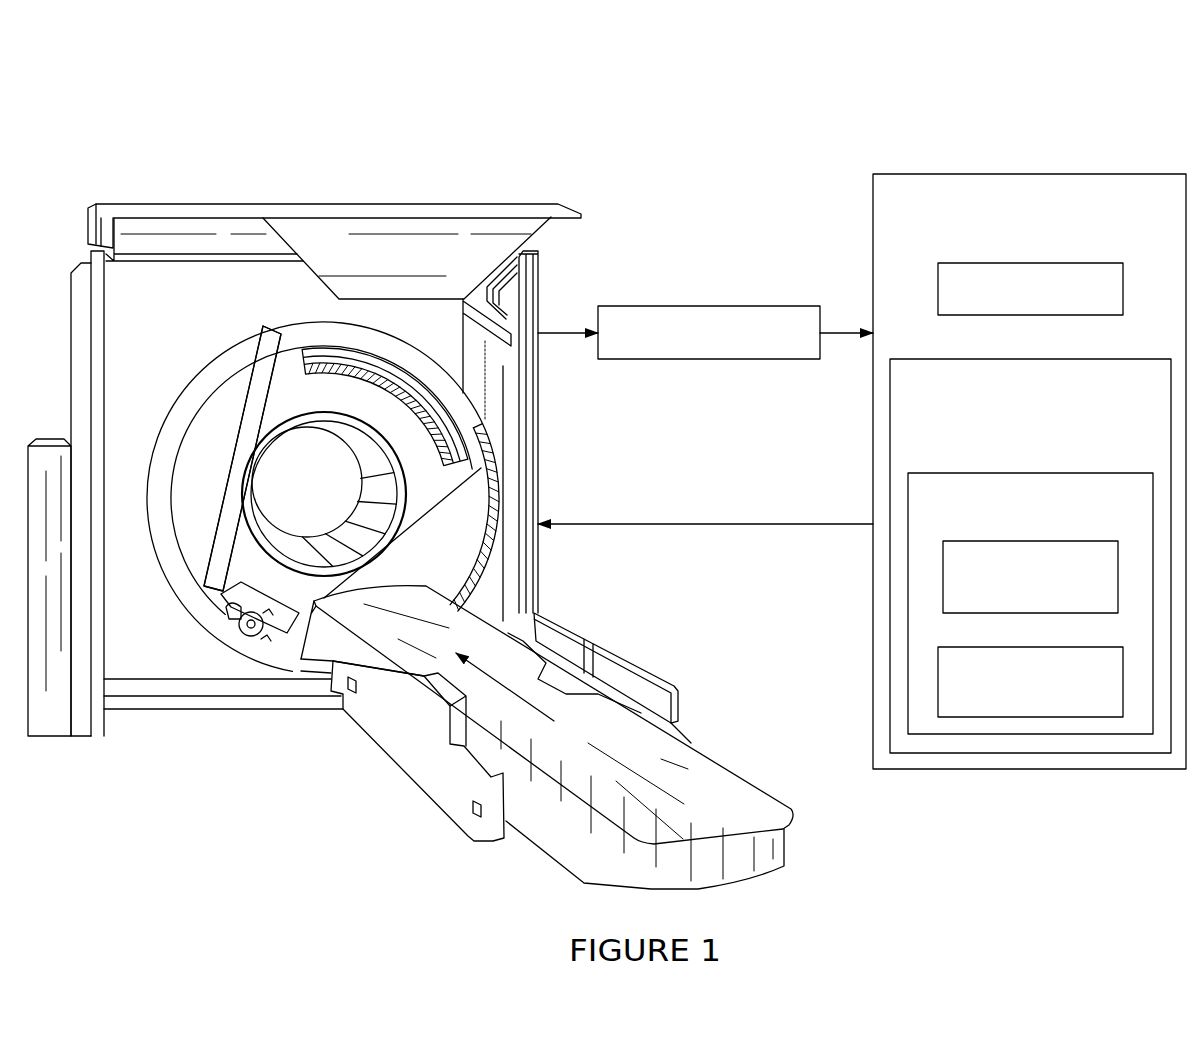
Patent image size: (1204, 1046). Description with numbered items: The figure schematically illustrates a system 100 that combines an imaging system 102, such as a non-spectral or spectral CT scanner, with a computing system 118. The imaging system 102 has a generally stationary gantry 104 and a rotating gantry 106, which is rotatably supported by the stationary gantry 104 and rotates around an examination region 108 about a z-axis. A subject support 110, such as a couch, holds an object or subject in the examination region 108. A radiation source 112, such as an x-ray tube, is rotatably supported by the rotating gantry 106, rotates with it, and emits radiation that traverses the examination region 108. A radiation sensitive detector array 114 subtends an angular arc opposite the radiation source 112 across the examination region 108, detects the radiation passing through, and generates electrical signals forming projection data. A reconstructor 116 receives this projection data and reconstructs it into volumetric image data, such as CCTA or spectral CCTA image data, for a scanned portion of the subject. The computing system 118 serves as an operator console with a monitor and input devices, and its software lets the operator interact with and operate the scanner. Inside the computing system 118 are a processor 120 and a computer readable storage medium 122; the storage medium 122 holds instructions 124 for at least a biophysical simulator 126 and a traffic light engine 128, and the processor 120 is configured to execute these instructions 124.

The system 100 is at (118, 82).
The imaging system 102 is at (118, 138).
The stationary gantry 104 is at (92, 330).
The rotating gantry 106 is at (280, 392).
The examination region 108 is at (308, 506).
The subject support 110 is at (723, 783).
The radiation source 112 is at (250, 624).
The radiation sensitive detector array 114 is at (437, 417).
The reconstructor 116 is at (708, 305).
The computing system 118 is at (1030, 173).
The processor 120 is at (1030, 262).
The computer readable storage medium 122 is at (1030, 358).
The instructions 124 is at (1030, 472).
The biophysical simulator 126 is at (1030, 540).
The traffic light engine 128 is at (1030, 646).